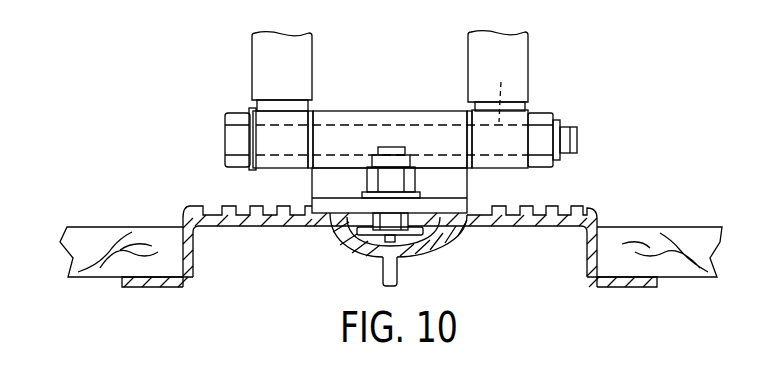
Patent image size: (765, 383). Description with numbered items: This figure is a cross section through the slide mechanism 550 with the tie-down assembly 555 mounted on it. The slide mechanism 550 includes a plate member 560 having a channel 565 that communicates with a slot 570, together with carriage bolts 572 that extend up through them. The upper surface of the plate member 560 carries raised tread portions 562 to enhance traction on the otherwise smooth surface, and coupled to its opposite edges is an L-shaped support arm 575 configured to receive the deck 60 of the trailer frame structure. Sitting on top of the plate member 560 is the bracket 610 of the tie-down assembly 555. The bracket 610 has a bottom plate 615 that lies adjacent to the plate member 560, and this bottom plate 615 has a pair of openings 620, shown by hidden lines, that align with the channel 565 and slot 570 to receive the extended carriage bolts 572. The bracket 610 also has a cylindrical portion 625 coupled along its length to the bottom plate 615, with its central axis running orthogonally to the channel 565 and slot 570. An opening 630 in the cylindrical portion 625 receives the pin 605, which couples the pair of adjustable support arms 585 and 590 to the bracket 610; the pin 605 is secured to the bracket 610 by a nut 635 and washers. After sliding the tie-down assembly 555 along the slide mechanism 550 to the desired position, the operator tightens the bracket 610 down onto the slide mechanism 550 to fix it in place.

The tie-down assembly 555 is at (388, 88).
The support arm 585 is at (265, 63).
The support arm 590 is at (522, 70).
The opening 630 is at (492, 88).
The pin 605 is at (236, 114).
The cylindrical portion 625 is at (418, 113).
The bracket 610 is at (336, 180).
The nut 635 is at (545, 140).
The carriage bolt 572 is at (378, 147).
The opening 620 is at (401, 196).
The bottom plate 615 is at (320, 205).
The slot 570 is at (420, 218).
The raised tread portion 562 is at (210, 197).
The plate member 560 is at (567, 212).
The L-shaped support arm 575 is at (206, 292).
The deck 60 is at (132, 212).
The channel 565 is at (423, 243).
The slide mechanism 550 is at (366, 271).